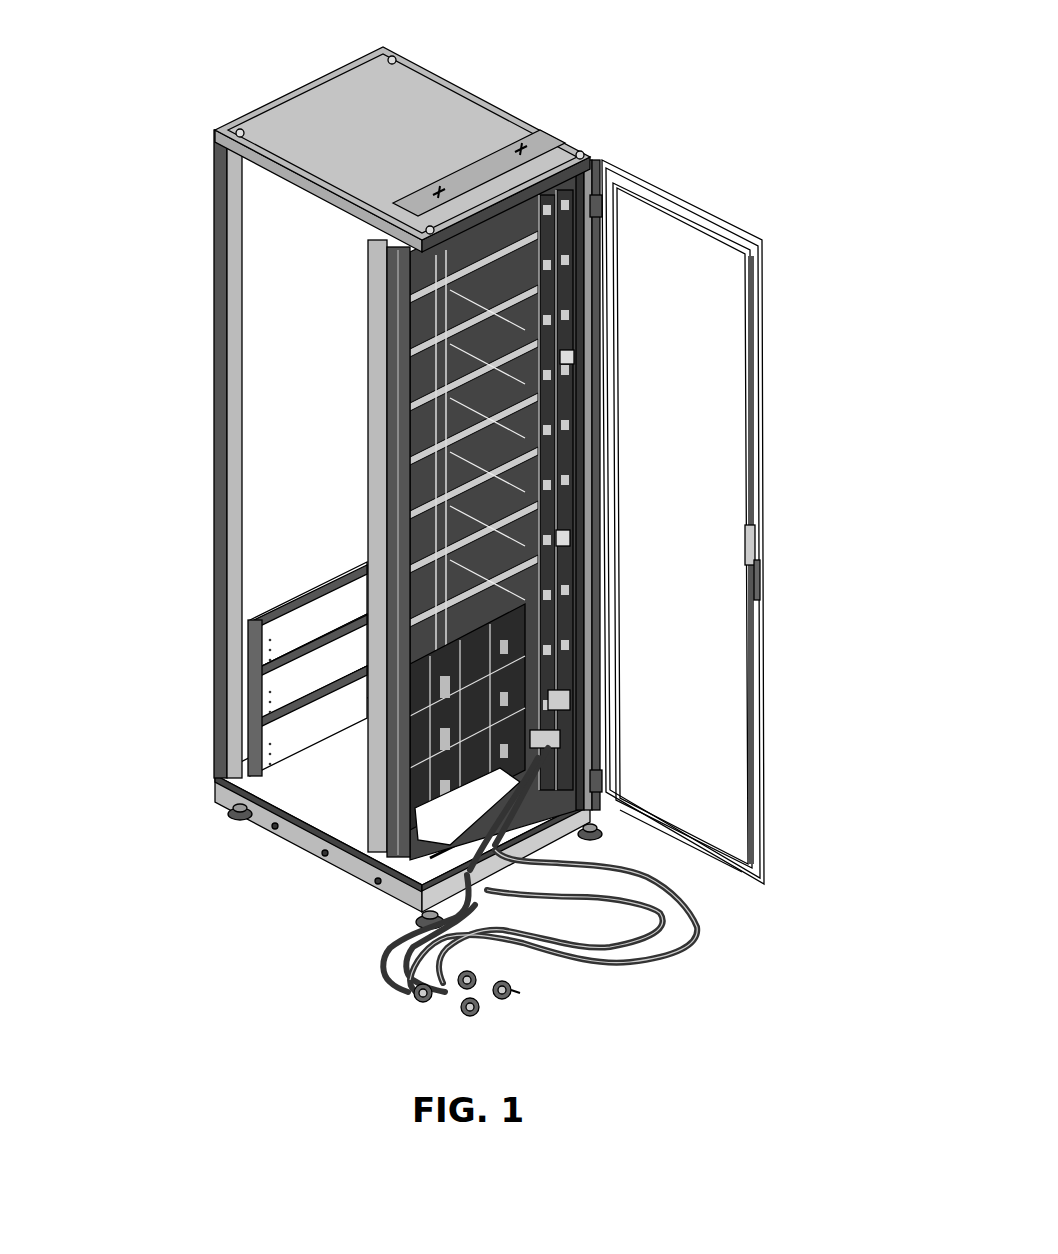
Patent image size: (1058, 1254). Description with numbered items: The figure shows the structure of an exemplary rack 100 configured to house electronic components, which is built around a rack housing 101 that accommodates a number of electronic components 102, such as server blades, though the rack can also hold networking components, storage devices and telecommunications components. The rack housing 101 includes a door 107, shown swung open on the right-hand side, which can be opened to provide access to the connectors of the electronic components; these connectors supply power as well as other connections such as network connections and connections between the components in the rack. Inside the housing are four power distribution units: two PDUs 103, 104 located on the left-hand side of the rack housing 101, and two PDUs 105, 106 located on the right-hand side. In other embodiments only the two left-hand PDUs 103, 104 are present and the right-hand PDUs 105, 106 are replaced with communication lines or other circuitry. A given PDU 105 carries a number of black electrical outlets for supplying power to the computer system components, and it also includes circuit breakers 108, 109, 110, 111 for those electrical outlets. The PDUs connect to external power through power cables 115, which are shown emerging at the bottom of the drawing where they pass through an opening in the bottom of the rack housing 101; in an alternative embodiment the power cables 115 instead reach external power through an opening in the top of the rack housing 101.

The rack 100 is at (722, 139).
The rack housing 101 is at (458, 85).
The electronic components 102 is at (250, 752).
The PDU 103 is at (385, 402).
The PDU 104 is at (368, 352).
The PDU 105 is at (570, 315).
The PDU 106 is at (552, 375).
The door 107 is at (700, 205).
The circuit breaker 108 is at (578, 357).
The circuit breaker 109 is at (565, 538).
The circuit breaker 110 is at (568, 705).
The circuit breaker 111 is at (545, 742).
The power cables 115 is at (541, 888).